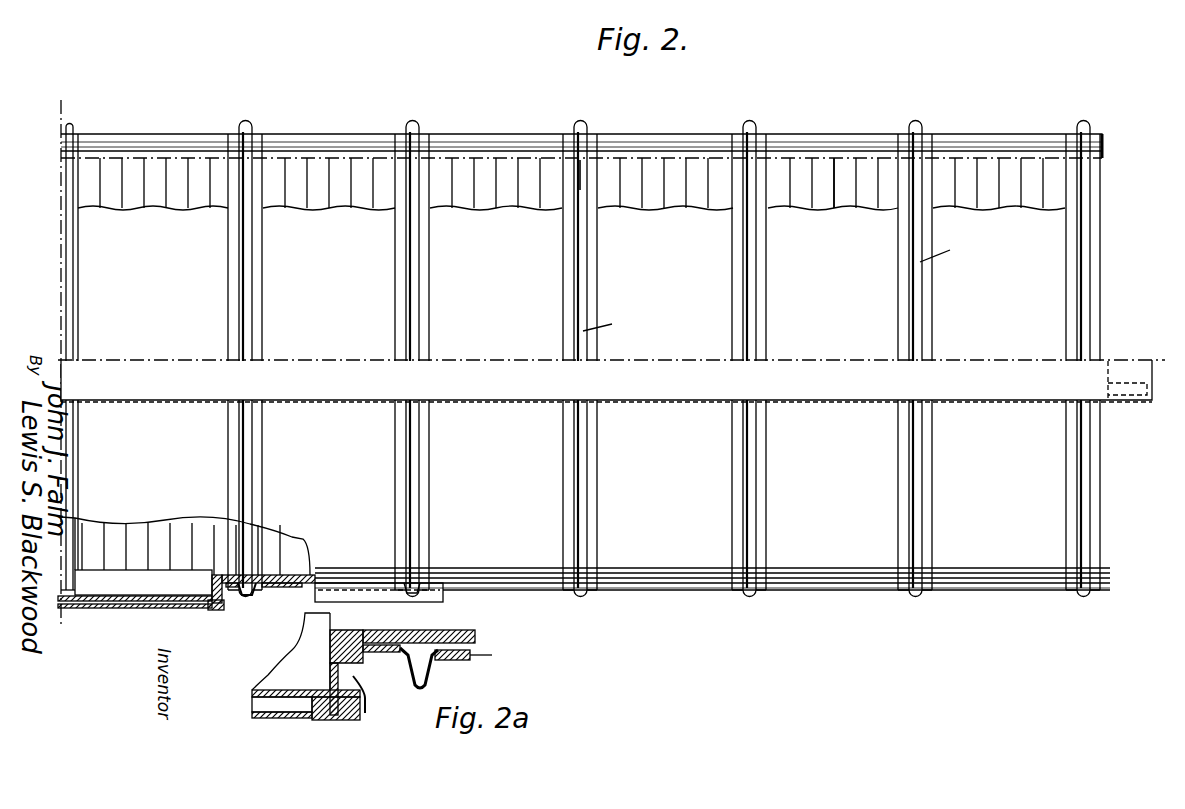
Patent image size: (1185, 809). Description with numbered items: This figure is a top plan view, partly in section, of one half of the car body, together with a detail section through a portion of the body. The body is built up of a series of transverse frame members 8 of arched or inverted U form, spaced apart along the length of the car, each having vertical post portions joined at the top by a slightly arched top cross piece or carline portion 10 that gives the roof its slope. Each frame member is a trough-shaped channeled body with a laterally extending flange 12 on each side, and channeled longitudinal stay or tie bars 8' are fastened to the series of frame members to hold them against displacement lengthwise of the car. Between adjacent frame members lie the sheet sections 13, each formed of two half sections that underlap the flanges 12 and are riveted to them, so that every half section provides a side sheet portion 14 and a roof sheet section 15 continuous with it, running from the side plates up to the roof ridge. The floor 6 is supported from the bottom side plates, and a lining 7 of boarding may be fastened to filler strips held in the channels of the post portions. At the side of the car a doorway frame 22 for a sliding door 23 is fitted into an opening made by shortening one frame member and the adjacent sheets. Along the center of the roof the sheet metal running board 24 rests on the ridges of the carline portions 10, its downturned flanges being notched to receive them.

In FIG. 2, the floor 6 is at (838, 172).
In FIG. 2, the lining 7 is at (329, 104).
In FIG. 2a, the lining 7 is at (385, 628).
In FIG. 2, the frame member 8 is at (595, 434).
In FIG. 2a, the frame member 8 is at (420, 676).
In FIG. 2, the longitudinal stay or tie bar 8' is at (581, 130).
In FIG. 2, the top cross piece or carline portion 10 is at (580, 185).
In FIG. 2, the laterally extending flange 12 is at (258, 262).
In FIG. 2a, the laterally extending flange 12 is at (442, 628).
In FIG. 2, the sheet section 13 is at (655, 563).
In FIG. 2, the side sheet portion 14 is at (519, 590).
In FIG. 2a, the side sheet portion 14 is at (492, 655).
In FIG. 2, the roof sheet section 15 is at (563, 366).
In FIG. 2, the doorway frame 22 is at (222, 600).
In FIG. 2a, the doorway frame 22 is at (325, 650).
In FIG. 2, the sliding door 23 is at (97, 608).
In FIG. 2a, the sliding door 23 is at (270, 708).
In FIG. 2, the running board 24 is at (532, 390).